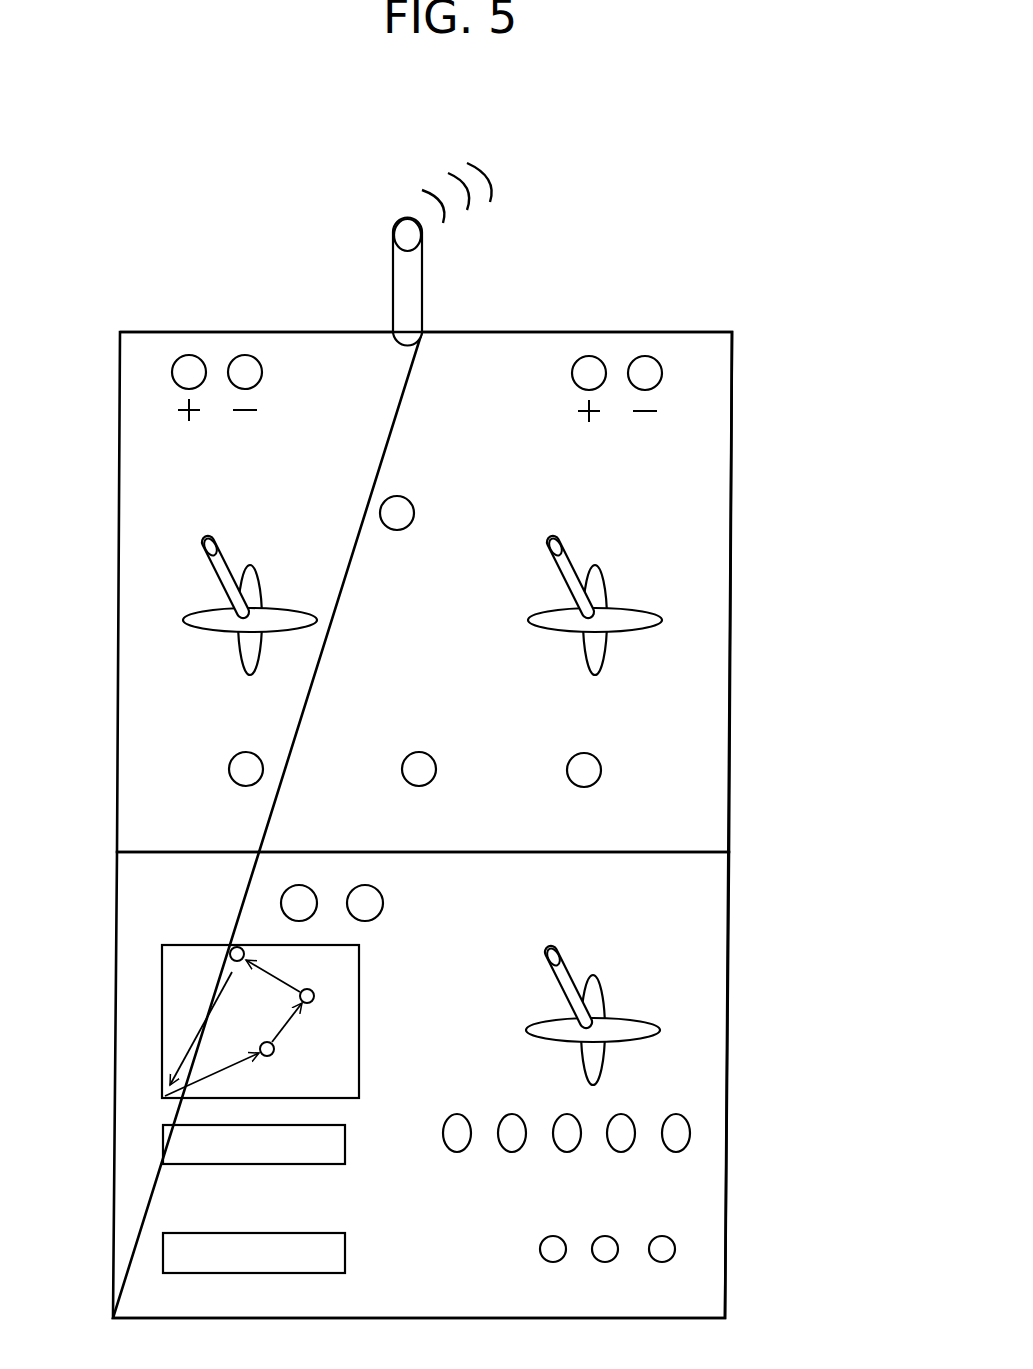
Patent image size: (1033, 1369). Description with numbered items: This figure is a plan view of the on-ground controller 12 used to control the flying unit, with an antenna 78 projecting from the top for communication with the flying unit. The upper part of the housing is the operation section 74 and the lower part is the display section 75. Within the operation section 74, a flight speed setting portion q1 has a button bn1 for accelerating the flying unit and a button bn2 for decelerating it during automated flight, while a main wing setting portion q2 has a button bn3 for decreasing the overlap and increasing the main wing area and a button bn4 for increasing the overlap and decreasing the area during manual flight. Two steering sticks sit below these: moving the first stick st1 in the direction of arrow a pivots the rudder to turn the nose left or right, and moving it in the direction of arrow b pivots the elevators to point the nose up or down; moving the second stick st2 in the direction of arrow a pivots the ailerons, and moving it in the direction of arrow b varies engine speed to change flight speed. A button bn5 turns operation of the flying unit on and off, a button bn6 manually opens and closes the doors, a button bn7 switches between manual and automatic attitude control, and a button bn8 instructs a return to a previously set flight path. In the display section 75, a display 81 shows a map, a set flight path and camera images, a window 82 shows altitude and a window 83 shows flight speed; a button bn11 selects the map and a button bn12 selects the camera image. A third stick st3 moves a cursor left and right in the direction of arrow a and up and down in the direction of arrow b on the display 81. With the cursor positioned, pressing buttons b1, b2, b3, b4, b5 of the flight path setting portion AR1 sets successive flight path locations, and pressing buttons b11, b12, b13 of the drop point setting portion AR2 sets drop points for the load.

The on-ground controller 12 is at (757, 272).
The antenna 78 is at (393, 272).
The operation section 74 is at (748, 386).
The display section 75 is at (748, 888).
The flight speed setting portion q1 is at (203, 325).
The main wing setting portion q2 is at (623, 330).
The button bn1 is at (175, 385).
The button bn2 is at (262, 372).
The button bn3 is at (572, 376).
The button bn4 is at (660, 378).
The button bn5 is at (400, 496).
The button bn6 is at (260, 757).
The button bn7 is at (433, 757).
The button bn8 is at (598, 758).
The button bn11 is at (281, 905).
The button bn12 is at (383, 900).
The first stick st1 is at (218, 632).
The second stick st2 is at (562, 632).
The third stick st3 is at (560, 1020).
The arrow a is at (275, 522).
The arrow b is at (333, 573).
The display 81 is at (202, 1020).
The window 82 is at (163, 1140).
The window 83 is at (163, 1250).
The flight path setting portion AR1 is at (559, 1162).
The drop point setting portion AR2 is at (552, 1250).
The button b1 is at (457, 1115).
The button b2 is at (512, 1115).
The button b3 is at (567, 1115).
The button b4 is at (621, 1115).
The button b5 is at (676, 1115).
The button b11 is at (547, 1232).
The button b12 is at (606, 1232).
The button b13 is at (661, 1232).